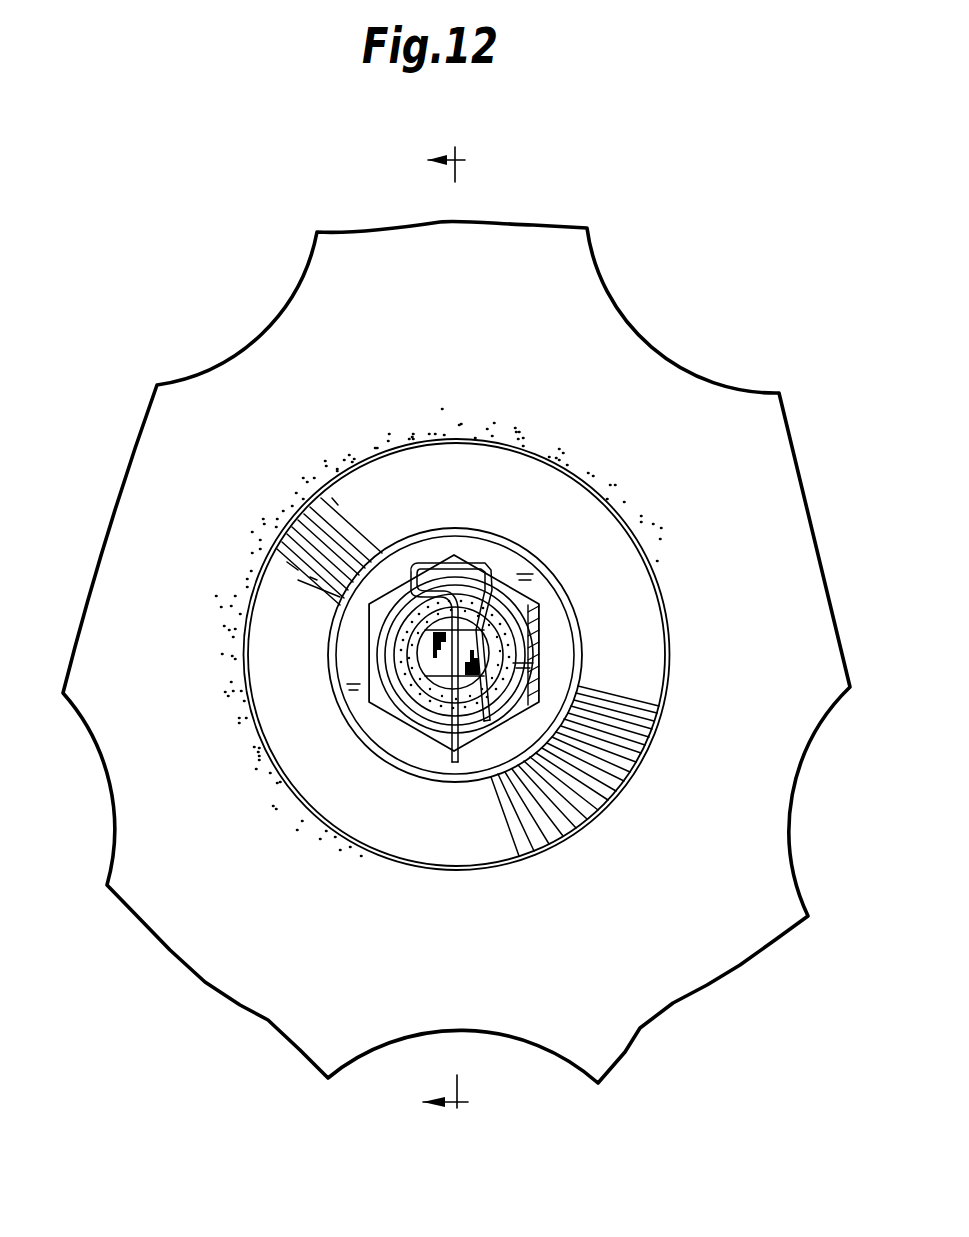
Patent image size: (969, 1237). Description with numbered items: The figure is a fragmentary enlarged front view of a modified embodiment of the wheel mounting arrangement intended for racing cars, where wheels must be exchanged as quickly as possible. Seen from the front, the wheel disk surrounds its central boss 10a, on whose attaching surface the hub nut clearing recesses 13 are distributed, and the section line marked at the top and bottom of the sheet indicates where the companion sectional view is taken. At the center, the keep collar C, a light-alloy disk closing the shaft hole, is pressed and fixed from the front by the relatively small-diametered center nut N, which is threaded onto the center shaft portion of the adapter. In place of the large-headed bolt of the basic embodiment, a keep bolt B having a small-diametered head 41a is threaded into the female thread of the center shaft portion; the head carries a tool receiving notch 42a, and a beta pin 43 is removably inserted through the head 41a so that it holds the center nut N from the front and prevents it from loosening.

The boss 10a is at (651, 382).
The hub nut clearing recess 13 is at (445, 630).
The keep collar C is at (672, 678).
The center nut N is at (548, 655).
The keep bolt B is at (424, 674).
The small-diametered head 41a is at (370, 648).
The tool receiving notch 42a is at (443, 712).
The beta pin 43 is at (482, 562).